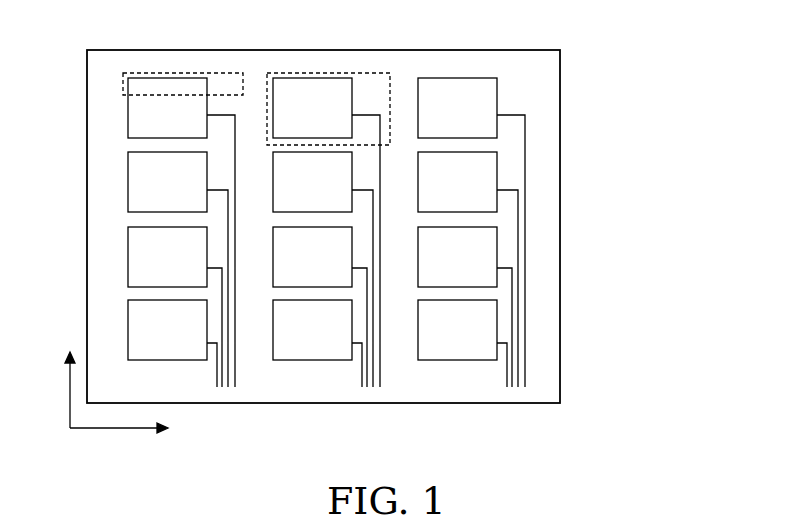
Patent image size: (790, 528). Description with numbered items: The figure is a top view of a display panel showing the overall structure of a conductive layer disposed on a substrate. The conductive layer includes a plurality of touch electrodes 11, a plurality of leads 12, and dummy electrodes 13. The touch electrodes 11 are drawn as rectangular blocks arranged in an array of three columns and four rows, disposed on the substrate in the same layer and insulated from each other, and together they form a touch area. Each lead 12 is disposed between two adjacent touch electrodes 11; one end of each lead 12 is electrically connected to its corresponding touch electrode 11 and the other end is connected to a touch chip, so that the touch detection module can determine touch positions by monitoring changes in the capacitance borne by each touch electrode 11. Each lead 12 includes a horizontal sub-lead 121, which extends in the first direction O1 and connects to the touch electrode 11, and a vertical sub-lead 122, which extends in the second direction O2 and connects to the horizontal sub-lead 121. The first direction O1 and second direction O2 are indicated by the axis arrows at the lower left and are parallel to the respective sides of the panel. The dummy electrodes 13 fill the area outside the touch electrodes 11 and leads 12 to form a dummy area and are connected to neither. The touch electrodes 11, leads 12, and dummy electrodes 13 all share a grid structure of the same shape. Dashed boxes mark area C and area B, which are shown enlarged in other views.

The touch electrode 11 is at (455, 78).
The lead 12 is at (591, 224).
The horizontal sub-lead 121 is at (517, 108).
The vertical sub-lead 122 is at (525, 147).
The dummy electrode 13 is at (543, 213).
The area C is at (157, 77).
The area B is at (300, 75).
The first direction O1 is at (134, 429).
The second direction O2 is at (70, 376).